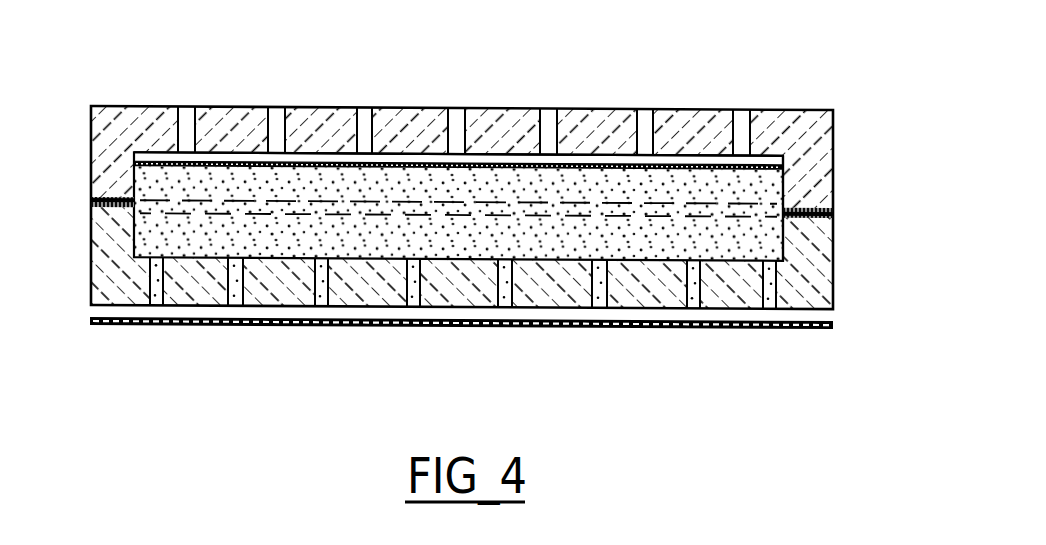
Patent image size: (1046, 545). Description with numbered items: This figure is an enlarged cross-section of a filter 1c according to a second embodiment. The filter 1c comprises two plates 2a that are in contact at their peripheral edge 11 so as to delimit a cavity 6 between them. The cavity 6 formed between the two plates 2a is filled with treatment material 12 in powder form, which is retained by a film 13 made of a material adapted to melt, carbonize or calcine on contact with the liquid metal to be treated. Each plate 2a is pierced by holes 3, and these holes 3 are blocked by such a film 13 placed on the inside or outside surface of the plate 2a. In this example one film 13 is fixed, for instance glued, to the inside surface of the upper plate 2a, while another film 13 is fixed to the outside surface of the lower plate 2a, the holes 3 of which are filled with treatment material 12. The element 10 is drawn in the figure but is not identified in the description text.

The filter 1c is at (837, 287).
The plate 2a is at (131, 105).
The hole 3 is at (456, 123).
The cavity 6 is at (687, 162).
The seal 10 is at (91, 202).
The peripheral edge 11 is at (108, 170).
The treatment material 12 is at (250, 187).
The film 13 is at (593, 167).